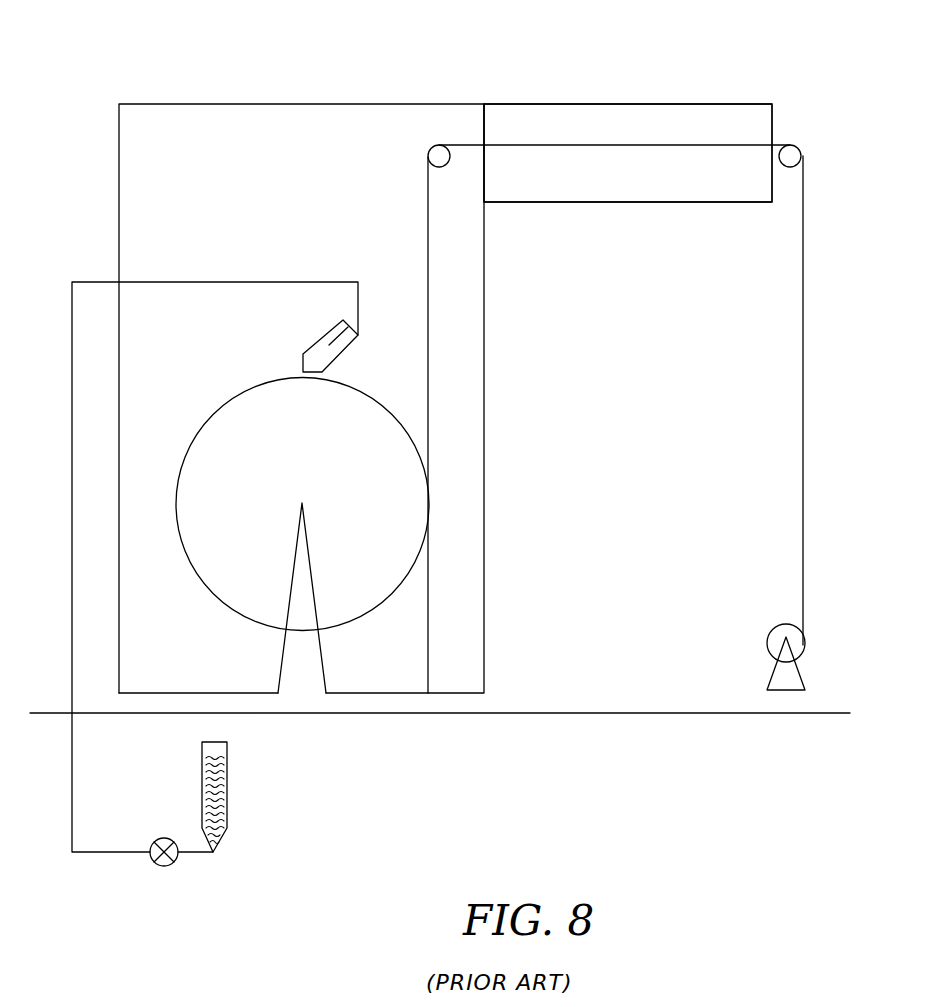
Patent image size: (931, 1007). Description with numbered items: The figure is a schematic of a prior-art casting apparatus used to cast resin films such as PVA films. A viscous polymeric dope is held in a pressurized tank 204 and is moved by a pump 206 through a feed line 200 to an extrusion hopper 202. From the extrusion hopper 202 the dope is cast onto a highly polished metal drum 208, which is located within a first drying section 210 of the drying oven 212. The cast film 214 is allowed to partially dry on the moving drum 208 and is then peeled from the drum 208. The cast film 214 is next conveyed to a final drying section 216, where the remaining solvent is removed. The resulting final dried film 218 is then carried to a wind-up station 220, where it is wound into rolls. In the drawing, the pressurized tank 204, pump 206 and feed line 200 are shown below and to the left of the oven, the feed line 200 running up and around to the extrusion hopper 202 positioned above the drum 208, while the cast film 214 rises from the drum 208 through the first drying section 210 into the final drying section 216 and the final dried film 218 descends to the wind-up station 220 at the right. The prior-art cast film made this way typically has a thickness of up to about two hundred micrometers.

The feed line 200 is at (72, 306).
The extrusion hopper 202 is at (312, 348).
The pressurized tank 204 is at (228, 780).
The pump 206 is at (178, 858).
The metal drum 208 is at (372, 505).
The first drying section 210 is at (226, 181).
The drying oven 212 is at (540, 98).
The cast film 214 is at (425, 231).
The final drying section 216 is at (648, 203).
The final dried film 218 is at (803, 440).
The wind-up station 220 is at (777, 625).